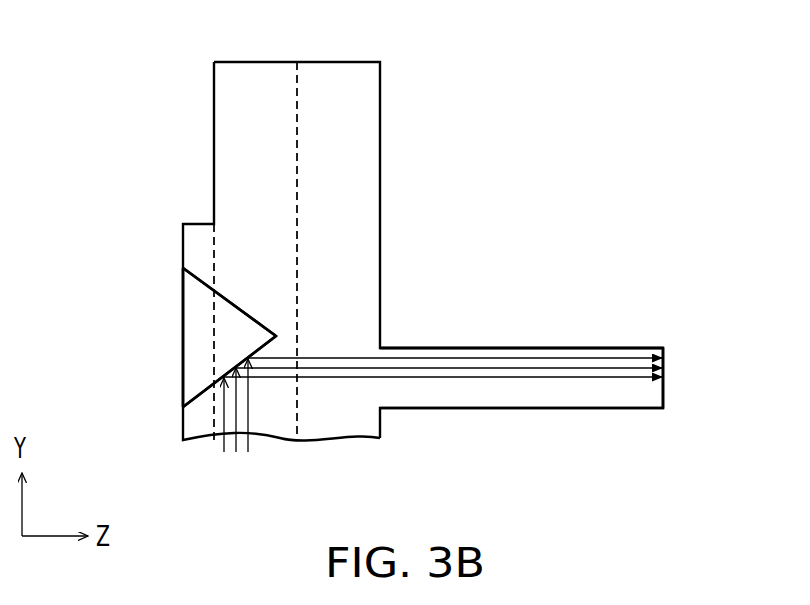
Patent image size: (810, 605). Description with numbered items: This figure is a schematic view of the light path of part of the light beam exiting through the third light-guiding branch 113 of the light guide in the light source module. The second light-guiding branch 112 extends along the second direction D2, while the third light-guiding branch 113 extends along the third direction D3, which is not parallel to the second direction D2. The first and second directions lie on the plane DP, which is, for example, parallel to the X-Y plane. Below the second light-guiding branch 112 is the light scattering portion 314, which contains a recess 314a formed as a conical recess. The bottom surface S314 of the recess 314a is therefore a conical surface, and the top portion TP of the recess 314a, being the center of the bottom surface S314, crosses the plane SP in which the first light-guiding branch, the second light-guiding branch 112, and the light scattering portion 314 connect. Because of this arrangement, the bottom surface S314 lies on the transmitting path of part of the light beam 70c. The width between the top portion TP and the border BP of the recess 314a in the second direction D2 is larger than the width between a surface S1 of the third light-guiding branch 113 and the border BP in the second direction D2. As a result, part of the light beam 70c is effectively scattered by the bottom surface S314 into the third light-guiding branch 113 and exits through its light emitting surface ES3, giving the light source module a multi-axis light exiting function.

The second light-guiding branch 112 is at (356, 124).
The third light-guiding branch 113 is at (614, 355).
The light scattering portion 314 is at (160, 218).
The recess 314a is at (203, 340).
The light beam 70c is at (248, 441).
The plane SP is at (218, 246).
The plane DP is at (300, 246).
The top portion TP is at (252, 337).
The bottom surface S314 is at (278, 347).
The surface S1 is at (506, 346).
The light emitting surface ES3 is at (666, 372).
The border BP is at (181, 405).
The second direction D2 is at (350, 7).
The third direction D3 is at (727, 332).